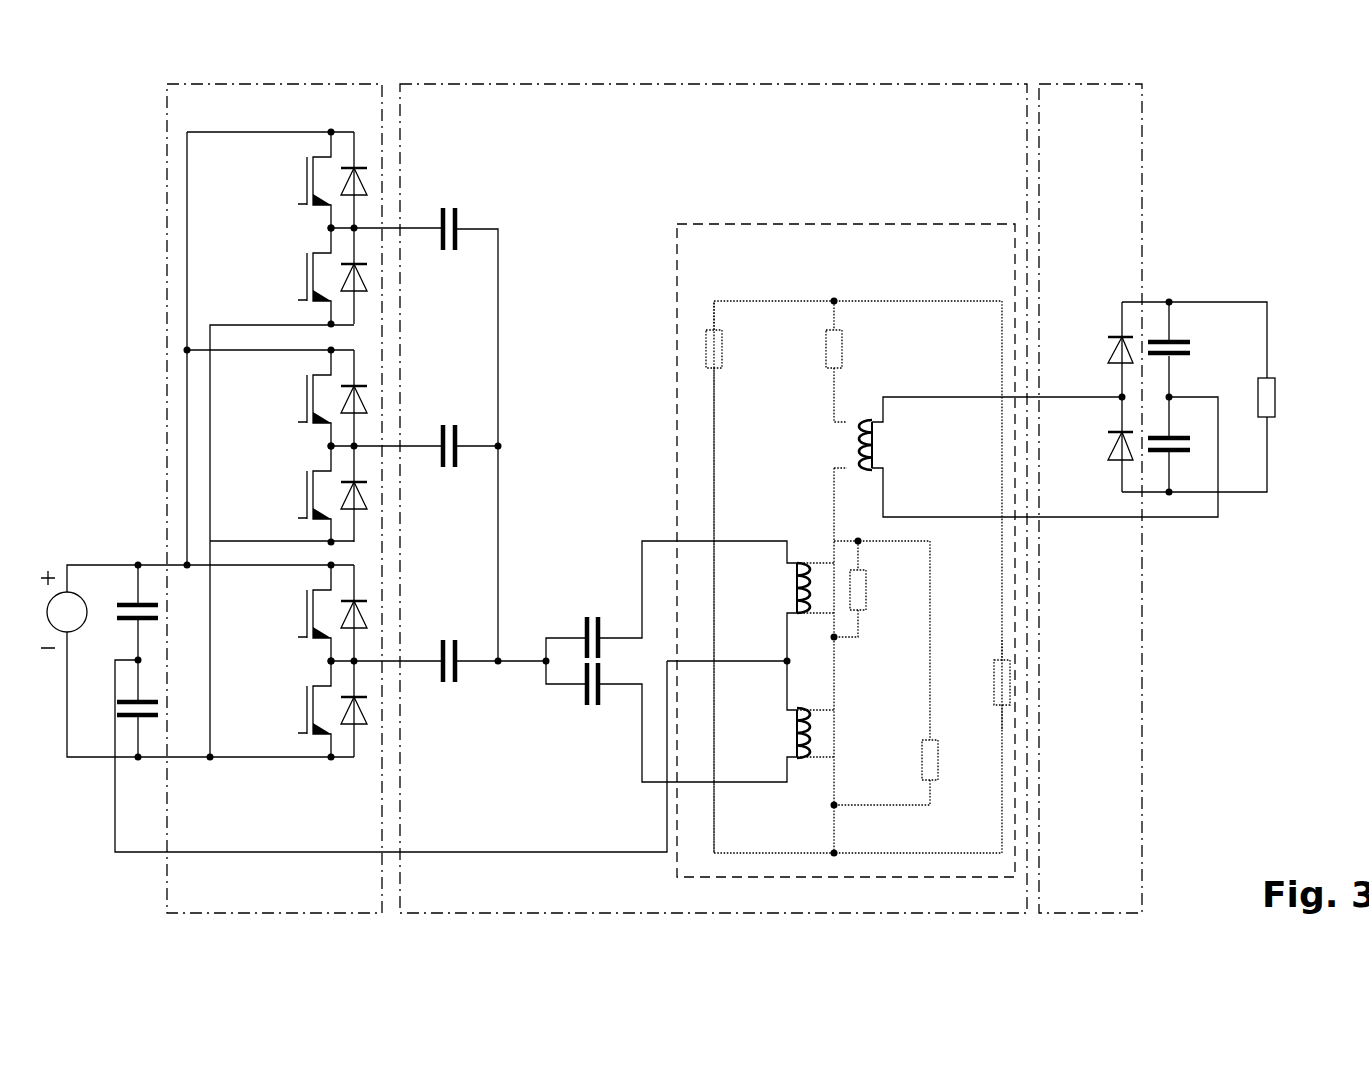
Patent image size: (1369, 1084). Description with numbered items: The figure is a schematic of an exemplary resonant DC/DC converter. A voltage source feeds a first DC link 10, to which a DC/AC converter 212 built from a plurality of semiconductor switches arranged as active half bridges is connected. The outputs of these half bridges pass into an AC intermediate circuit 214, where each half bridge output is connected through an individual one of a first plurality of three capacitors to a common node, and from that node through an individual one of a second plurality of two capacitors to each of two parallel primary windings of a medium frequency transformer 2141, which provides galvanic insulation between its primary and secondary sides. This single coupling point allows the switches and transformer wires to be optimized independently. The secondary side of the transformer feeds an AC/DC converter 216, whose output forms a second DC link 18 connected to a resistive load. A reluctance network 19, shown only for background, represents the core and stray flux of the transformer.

The first DC link 10 is at (137, 587).
The second DC link 18 is at (1168, 473).
The reluctance network 19 is at (883, 300).
The DC/AC converter 212 is at (232, 906).
The AC intermediate circuit 214 is at (472, 906).
The medium frequency transformer 2141 is at (765, 269).
The AC/DC converter 216 is at (1107, 906).